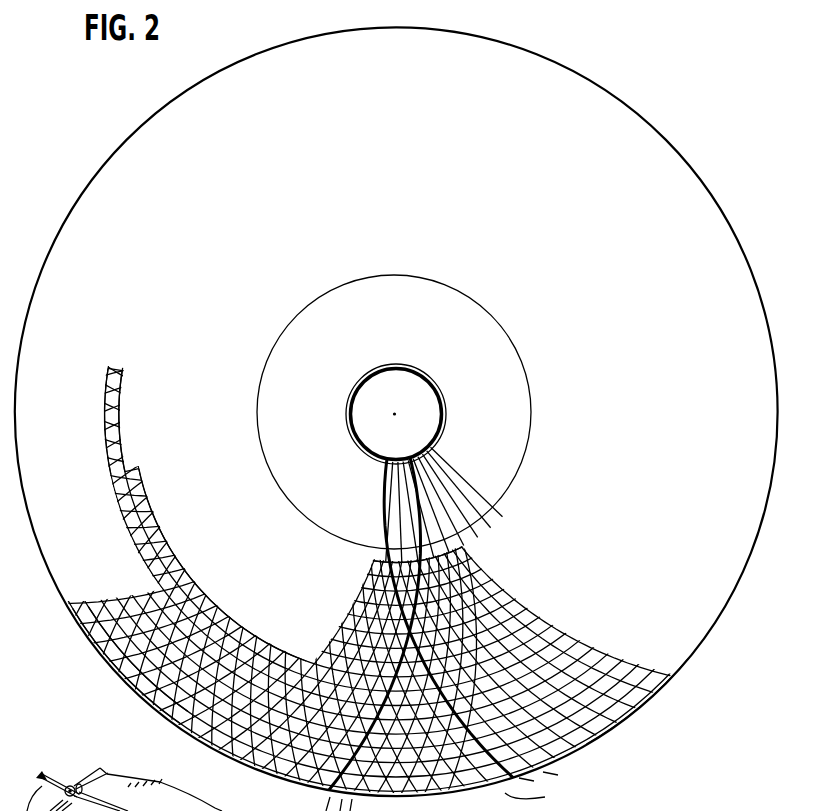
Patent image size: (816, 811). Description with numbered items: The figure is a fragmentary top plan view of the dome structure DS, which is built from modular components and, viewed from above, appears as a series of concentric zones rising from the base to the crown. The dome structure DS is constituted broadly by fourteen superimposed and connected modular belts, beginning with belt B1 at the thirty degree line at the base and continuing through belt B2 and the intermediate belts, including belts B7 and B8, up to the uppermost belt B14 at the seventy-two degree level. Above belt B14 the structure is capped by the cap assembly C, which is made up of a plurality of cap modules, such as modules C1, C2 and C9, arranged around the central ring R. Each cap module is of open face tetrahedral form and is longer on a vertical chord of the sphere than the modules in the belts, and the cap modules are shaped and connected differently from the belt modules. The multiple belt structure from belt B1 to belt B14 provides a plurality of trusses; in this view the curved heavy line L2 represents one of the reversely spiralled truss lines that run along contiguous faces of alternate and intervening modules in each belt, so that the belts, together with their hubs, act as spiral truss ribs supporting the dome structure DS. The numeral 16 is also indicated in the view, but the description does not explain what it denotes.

The central ring R is at (343, 400).
The cap assembly C is at (458, 410).
The cap module C1 is at (386, 529).
The cap module C2 is at (401, 502).
The cap module C9 is at (475, 492).
The modular belt B1 is at (69, 597).
The modular belt B2 is at (93, 600).
The modular belt B7 is at (113, 362).
The modular belt B8 is at (140, 477).
The modular belt B14 is at (366, 559).
The dome structure DS is at (637, 718).
The truss line L2 is at (515, 793).
The feed device 16 is at (68, 783).